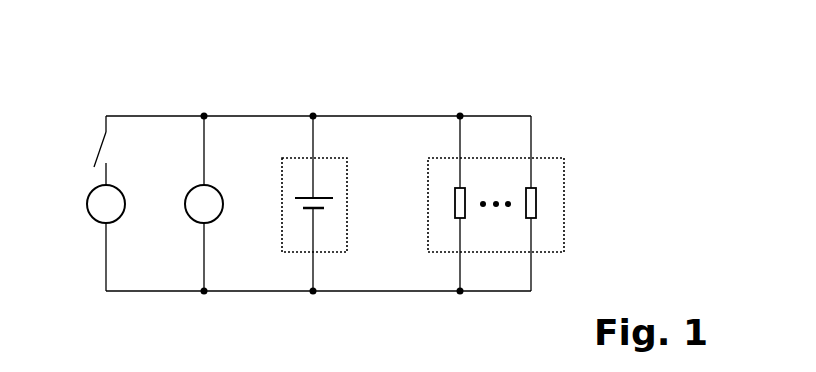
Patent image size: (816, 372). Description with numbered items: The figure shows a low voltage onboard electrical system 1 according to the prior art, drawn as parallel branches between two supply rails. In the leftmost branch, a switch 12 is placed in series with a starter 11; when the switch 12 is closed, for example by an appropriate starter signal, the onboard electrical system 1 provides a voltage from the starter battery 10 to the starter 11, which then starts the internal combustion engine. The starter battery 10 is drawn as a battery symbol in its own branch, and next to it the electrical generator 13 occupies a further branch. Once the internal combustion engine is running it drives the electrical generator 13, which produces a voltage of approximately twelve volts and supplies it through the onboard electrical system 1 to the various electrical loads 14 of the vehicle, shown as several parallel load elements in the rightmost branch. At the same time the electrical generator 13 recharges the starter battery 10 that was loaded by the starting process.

The onboard electrical system 1 is at (558, 72).
The starter battery 10 is at (281, 172).
The starter 11 is at (89, 216).
The switch 12 is at (100, 148).
The electrical generator 13 is at (188, 214).
The electrical loads 14 is at (427, 175).